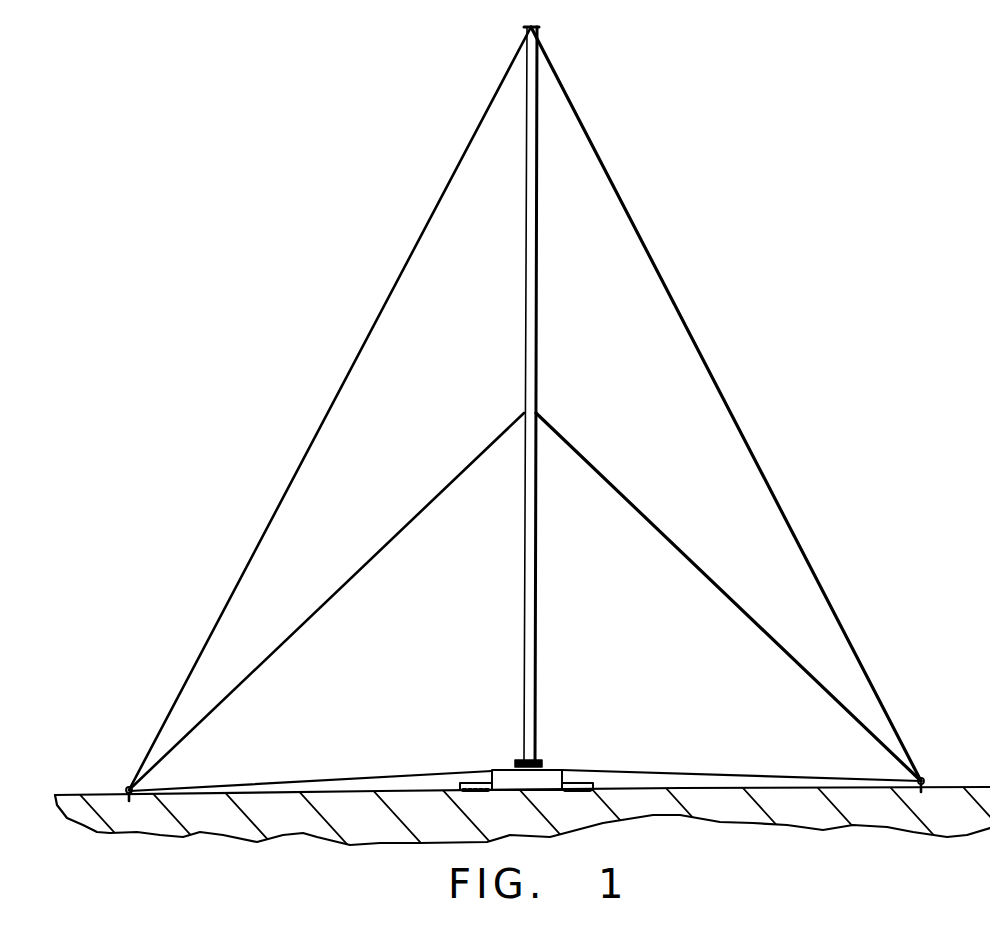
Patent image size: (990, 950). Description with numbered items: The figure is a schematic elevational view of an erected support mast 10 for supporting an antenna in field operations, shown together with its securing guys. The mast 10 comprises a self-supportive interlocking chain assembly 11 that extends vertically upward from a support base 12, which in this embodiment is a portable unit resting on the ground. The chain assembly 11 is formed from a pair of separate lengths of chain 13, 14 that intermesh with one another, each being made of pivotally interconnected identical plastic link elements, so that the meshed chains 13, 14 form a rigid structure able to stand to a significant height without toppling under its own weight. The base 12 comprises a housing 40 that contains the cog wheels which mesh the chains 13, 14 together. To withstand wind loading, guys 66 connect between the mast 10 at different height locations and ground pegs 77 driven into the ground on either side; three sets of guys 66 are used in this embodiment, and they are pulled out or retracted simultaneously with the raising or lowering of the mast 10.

The support mast 10 is at (692, 173).
The self-supportive interlocking chain assembly 11 is at (537, 333).
The support base 12 is at (557, 755).
The first length of chain 13 is at (463, 783).
The second length of chain 14 is at (588, 782).
The housing 40 is at (510, 778).
The guys 66 is at (360, 566).
The ground pegs 77 is at (127, 788).